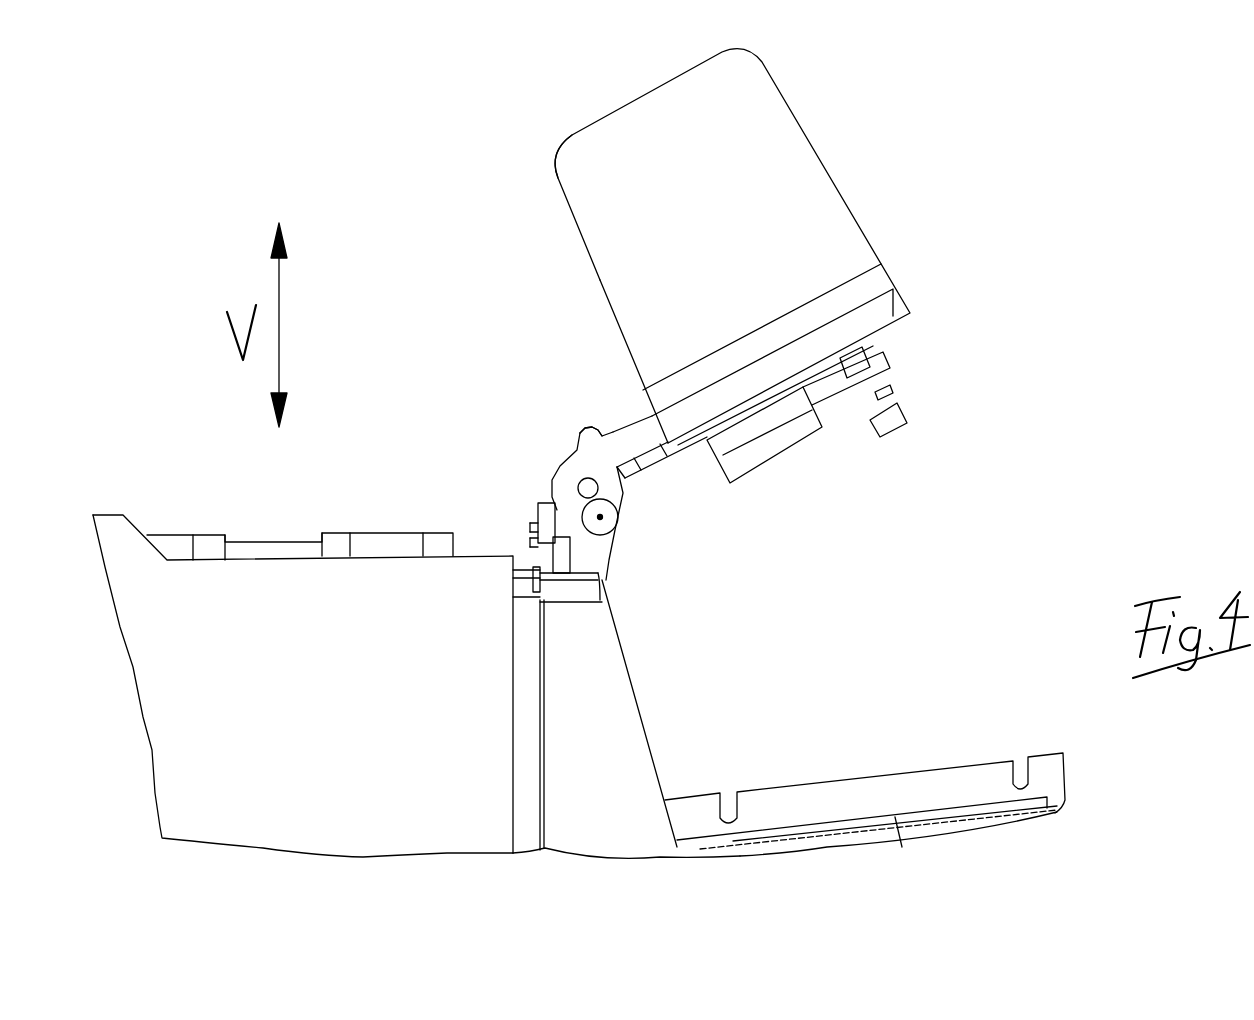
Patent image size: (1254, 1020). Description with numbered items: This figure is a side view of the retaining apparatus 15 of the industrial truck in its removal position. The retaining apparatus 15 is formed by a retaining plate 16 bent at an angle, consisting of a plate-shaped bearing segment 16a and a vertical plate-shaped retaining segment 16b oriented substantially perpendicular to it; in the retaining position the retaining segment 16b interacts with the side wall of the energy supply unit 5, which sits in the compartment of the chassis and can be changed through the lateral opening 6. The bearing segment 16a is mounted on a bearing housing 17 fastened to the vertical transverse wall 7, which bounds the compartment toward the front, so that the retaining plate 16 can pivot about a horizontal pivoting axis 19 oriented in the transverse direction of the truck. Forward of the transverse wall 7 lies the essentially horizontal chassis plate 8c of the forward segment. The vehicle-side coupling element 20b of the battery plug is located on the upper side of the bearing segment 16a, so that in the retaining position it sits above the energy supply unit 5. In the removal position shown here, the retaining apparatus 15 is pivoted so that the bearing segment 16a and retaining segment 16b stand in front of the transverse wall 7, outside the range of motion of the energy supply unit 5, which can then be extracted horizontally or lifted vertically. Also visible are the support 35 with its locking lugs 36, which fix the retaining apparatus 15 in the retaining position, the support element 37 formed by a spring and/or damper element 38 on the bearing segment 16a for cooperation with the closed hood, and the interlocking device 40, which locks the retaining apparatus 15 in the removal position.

The energy supply unit 5 is at (303, 686).
The lateral opening 6 is at (537, 702).
The vertical transverse wall 7 is at (550, 746).
The chassis plate 8c is at (773, 827).
The retaining apparatus 15 is at (952, 283).
The retaining plate 16 is at (860, 217).
The bearing segment 16a is at (707, 513).
The retaining segment 16b is at (583, 170).
The bearing housing 17 is at (632, 583).
The horizontal pivoting axis 19 is at (586, 488).
The vehicle-side coupling element 20b is at (840, 400).
The support 35 is at (580, 400).
The locking lugs 36 is at (580, 433).
The support element 37 is at (920, 395).
The spring and/or damper element 38 is at (907, 423).
The interlocking device 40 is at (568, 518).